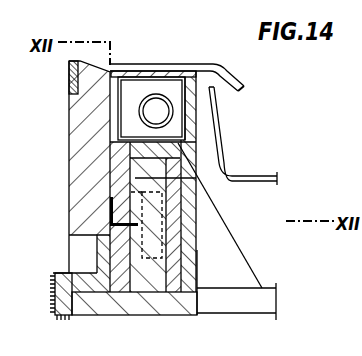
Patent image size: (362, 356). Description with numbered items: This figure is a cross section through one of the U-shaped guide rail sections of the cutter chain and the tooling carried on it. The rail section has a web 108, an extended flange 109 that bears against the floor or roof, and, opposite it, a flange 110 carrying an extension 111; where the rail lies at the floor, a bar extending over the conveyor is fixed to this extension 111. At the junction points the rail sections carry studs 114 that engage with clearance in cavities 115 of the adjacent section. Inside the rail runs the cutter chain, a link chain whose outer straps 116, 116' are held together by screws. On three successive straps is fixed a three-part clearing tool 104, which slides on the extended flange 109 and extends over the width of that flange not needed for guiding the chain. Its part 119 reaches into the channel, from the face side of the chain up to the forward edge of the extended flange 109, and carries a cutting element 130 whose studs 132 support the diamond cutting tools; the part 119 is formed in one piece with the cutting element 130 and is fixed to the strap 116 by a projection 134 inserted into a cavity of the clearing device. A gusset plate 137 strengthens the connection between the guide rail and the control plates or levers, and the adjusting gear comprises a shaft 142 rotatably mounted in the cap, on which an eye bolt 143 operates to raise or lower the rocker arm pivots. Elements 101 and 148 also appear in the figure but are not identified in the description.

The housing body 101 is at (110, 146).
The clearing tool 104 is at (86, 177).
The web 108 is at (222, 165).
The extended flange 109 is at (186, 308).
The flange 110 is at (196, 145).
The extension 111 is at (128, 68).
The studs 114 is at (181, 68).
The cavities 115 is at (196, 113).
The outer strap 116 is at (85, 217).
The outer strap 116' is at (206, 225).
The part extending into the channel 119 is at (90, 274).
The cutting element 130 is at (62, 287).
The studs 132 is at (55, 304).
The projection 134 is at (97, 243).
The gusset plates 137 is at (223, 240).
The shaft 142 is at (241, 77).
The eye bolt 143 is at (110, 96).
The bottom plate 148 is at (133, 302).